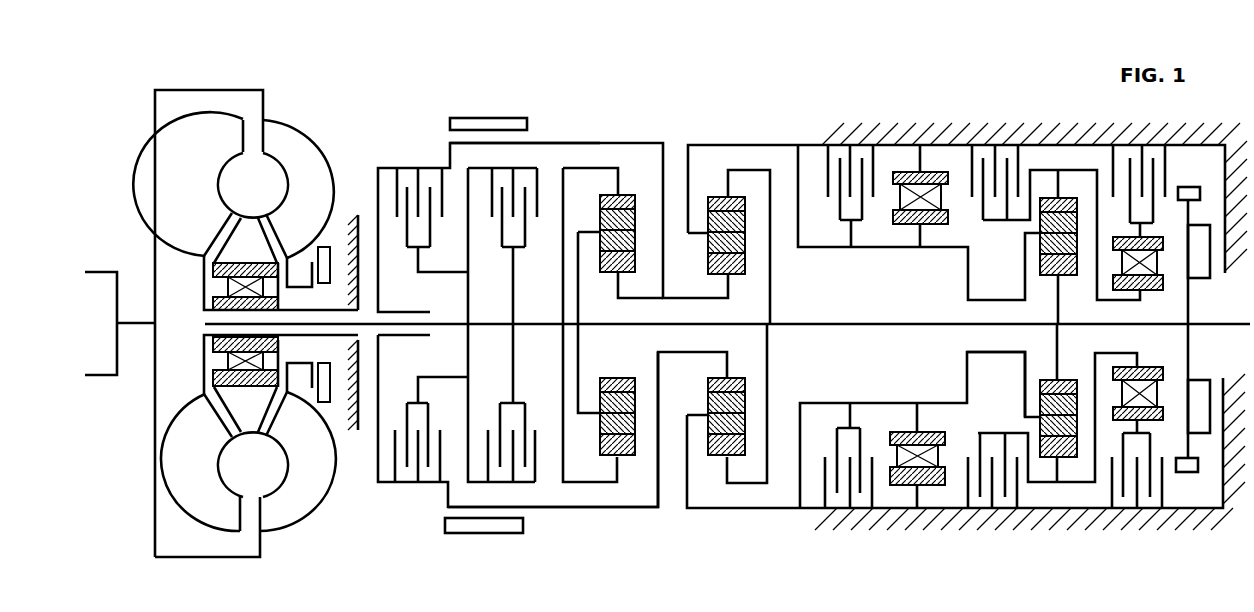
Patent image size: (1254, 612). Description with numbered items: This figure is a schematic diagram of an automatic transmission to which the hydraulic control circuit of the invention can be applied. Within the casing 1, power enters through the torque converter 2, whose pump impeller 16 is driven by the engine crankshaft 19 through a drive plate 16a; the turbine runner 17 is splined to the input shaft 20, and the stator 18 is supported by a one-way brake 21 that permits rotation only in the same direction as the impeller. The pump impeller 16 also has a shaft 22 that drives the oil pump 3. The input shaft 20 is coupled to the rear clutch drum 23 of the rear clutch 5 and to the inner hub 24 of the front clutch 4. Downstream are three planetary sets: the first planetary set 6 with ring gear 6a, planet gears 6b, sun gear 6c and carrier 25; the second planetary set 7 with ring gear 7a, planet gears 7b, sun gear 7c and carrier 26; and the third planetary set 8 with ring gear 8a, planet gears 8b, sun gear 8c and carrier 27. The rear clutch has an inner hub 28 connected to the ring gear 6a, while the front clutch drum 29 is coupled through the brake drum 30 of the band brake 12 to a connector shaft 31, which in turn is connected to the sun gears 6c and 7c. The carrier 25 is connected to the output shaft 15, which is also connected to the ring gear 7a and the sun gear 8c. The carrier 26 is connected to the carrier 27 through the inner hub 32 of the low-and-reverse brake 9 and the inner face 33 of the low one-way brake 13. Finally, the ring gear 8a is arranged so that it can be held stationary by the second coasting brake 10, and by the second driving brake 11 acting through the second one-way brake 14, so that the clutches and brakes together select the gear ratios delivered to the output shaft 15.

The casing 1 is at (925, 125).
The torque converter 2 is at (288, 118).
The oil pump 3 is at (323, 247).
The front clutch 4 is at (403, 164).
The rear clutch 5 is at (517, 160).
The first planetary set 6 is at (632, 178).
The ring gear 6a is at (600, 448).
The planet gears 6b is at (632, 398).
The sun gear 6c is at (596, 378).
The second planetary set 7 is at (752, 165).
The ring gear 7a is at (716, 458).
The planet gears 7b is at (706, 400).
The sun gear 7c is at (742, 378).
The third planetary set 8 is at (1070, 190).
The ring gear 8a is at (1067, 460).
The planet gears 8b is at (1066, 400).
The sun gear 8c is at (1043, 380).
The low-and-reverse brake 9 is at (820, 168).
The second coasting brake 10 is at (1010, 147).
The second driving brake 11 is at (1150, 145).
The band brake 12 is at (480, 116).
The low one-way brake 13 is at (900, 172).
The second one-way brake 14 is at (1120, 240).
The output shaft 15 is at (1210, 324).
The pump impeller 16 is at (295, 505).
The drive plate 16a is at (153, 152).
The turbine runner 17 is at (215, 510).
The stator 18 is at (258, 398).
The engine crankshaft 19 is at (129, 322).
The input shaft 20 is at (210, 323).
The one-way brake 21 is at (222, 362).
The shaft 22 is at (300, 272).
The rear clutch drum 23 is at (538, 166).
The inner hub 24 is at (414, 252).
The carrier 25 is at (572, 353).
The carrier 26 is at (668, 497).
The carrier 27 is at (1022, 386).
The inner hub 28 is at (518, 410).
The front clutch drum 29 is at (430, 163).
The brake drum 30 is at (495, 143).
The connector shaft 31 is at (645, 297).
The inner hub 32 is at (848, 222).
The inner face 33 is at (944, 222).